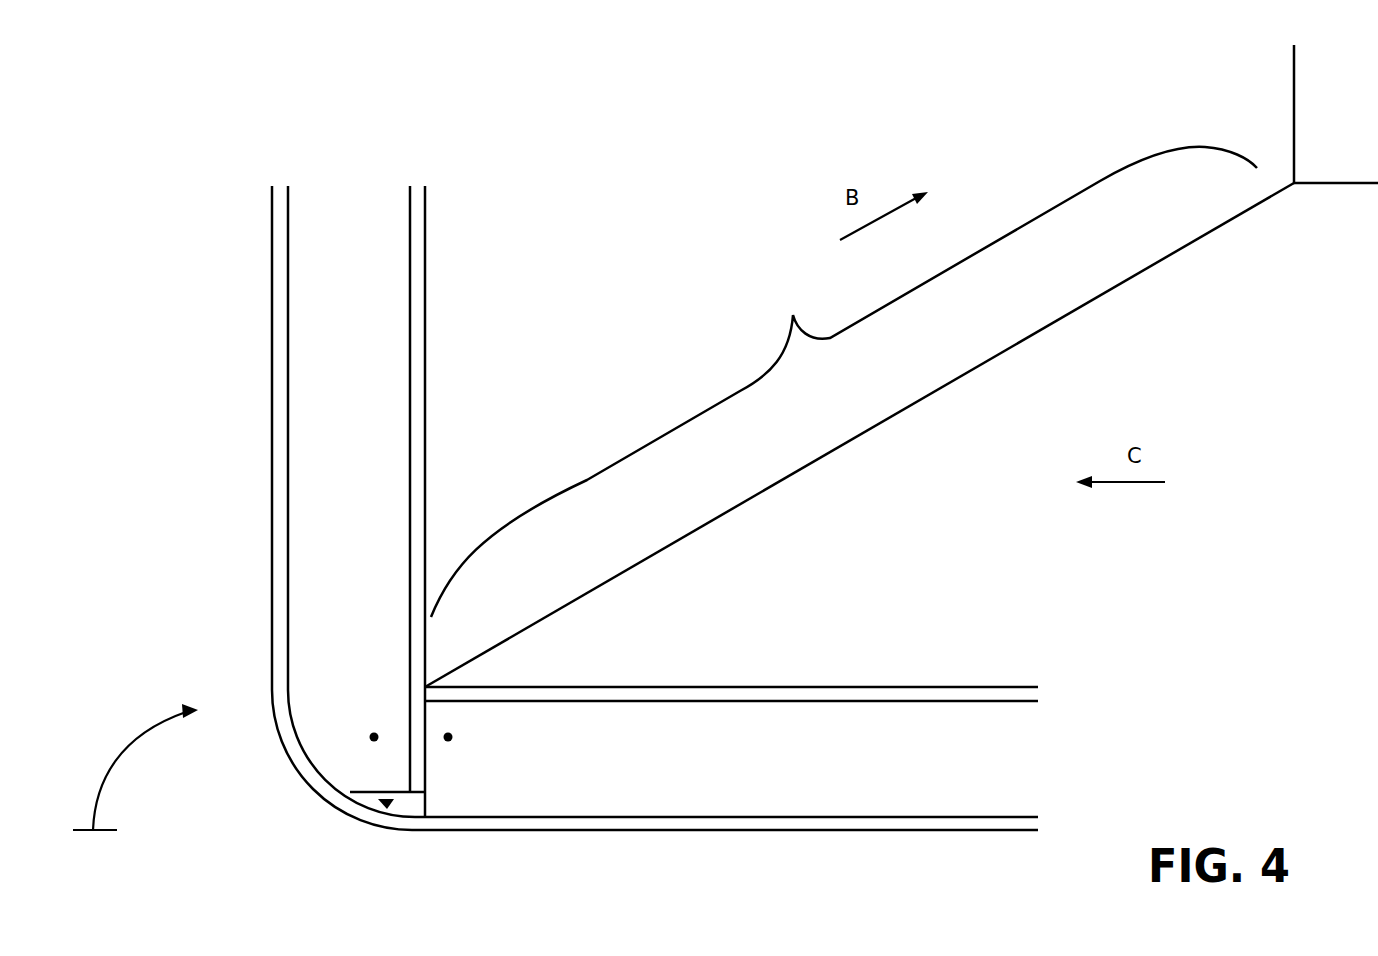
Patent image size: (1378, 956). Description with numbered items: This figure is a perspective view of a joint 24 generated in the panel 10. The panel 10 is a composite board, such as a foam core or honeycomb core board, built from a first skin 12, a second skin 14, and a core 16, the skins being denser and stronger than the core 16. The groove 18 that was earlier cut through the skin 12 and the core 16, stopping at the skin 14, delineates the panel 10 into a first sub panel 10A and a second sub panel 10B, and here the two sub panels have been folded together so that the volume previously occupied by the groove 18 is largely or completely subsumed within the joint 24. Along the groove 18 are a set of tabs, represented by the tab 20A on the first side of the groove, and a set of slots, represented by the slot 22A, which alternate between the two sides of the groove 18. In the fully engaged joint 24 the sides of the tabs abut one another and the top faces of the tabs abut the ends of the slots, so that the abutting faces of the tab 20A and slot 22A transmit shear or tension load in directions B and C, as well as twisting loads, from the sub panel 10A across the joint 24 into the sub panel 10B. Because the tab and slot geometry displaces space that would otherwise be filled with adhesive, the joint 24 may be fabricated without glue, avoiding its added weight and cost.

The panel 10 is at (184, 577).
The first sub panel 10A is at (642, 286).
The second sub panel 10B is at (997, 616).
The first skin 12 is at (417, 407).
The second skin 14 is at (280, 437).
The core 16 is at (357, 514).
The groove 18 is at (385, 802).
The tab 20A is at (374, 737).
The slot 22A is at (448, 737).
The joint 24 is at (844, 382).